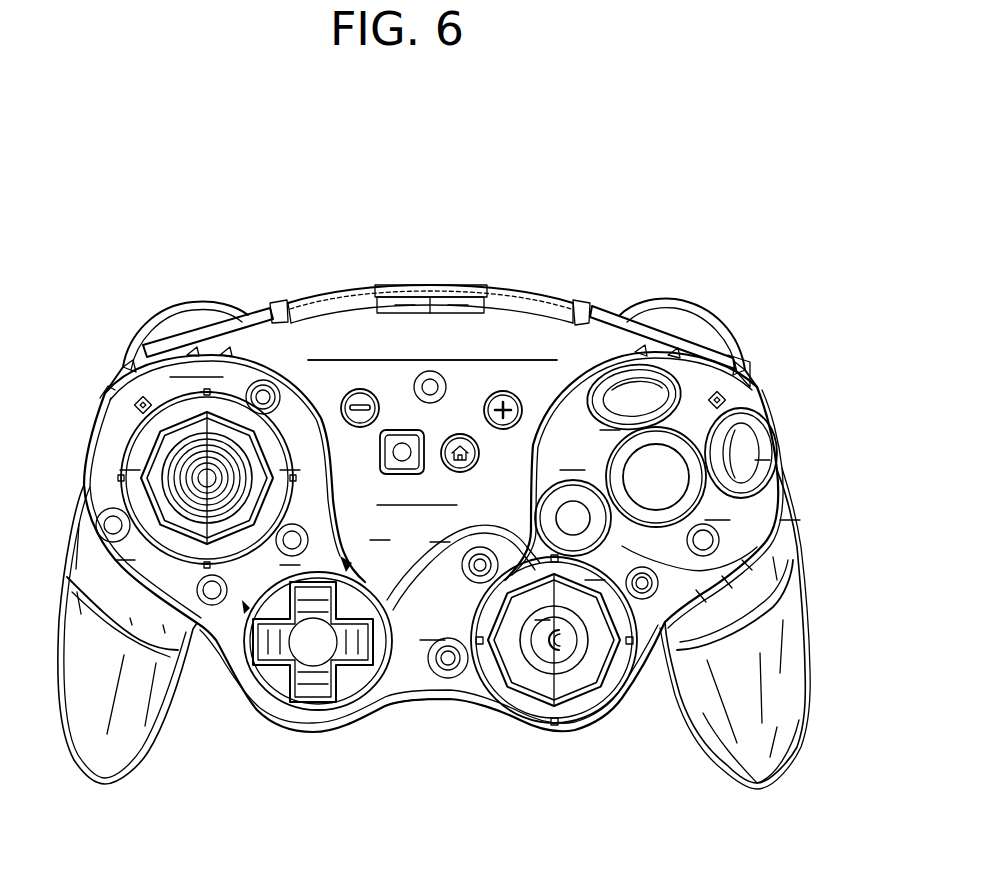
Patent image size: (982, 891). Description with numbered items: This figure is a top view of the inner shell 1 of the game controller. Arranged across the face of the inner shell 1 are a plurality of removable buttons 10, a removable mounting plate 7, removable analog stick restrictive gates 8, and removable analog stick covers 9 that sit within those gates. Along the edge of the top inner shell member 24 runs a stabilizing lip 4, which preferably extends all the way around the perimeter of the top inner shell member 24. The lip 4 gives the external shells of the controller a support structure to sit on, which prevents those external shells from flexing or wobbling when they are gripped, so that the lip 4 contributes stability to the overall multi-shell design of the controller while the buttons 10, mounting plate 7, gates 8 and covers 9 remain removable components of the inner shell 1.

The inner shell 1 is at (630, 272).
The stabilizing lip 4 is at (812, 700).
The removable mounting plate 7 is at (344, 352).
The removable analog stick restrictive gate 8 is at (132, 497).
The removable analog stick cover 9 is at (185, 470).
The removable button 10 is at (182, 332).
The top inner shell member 24 is at (423, 690).